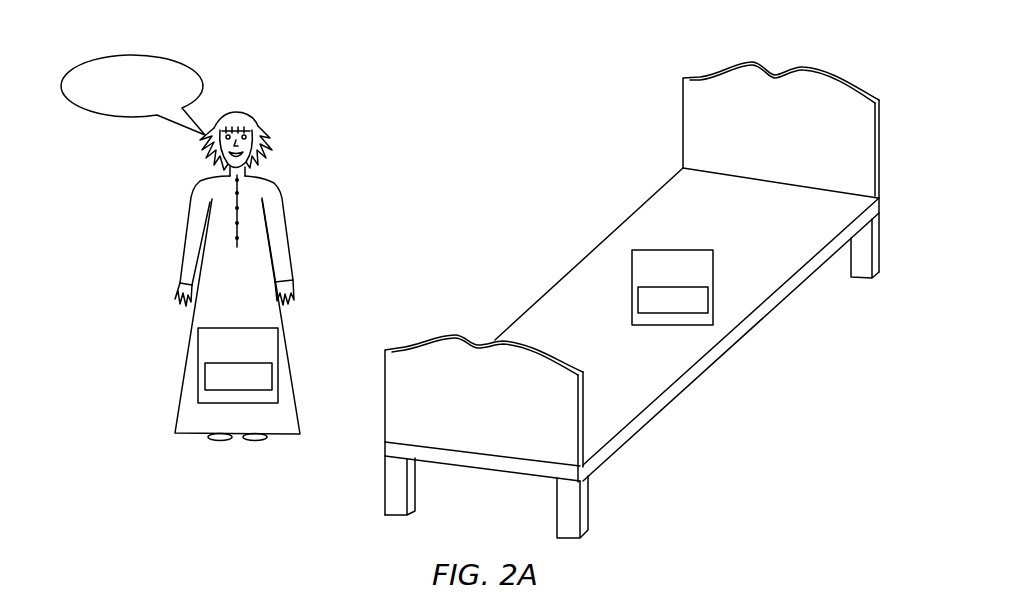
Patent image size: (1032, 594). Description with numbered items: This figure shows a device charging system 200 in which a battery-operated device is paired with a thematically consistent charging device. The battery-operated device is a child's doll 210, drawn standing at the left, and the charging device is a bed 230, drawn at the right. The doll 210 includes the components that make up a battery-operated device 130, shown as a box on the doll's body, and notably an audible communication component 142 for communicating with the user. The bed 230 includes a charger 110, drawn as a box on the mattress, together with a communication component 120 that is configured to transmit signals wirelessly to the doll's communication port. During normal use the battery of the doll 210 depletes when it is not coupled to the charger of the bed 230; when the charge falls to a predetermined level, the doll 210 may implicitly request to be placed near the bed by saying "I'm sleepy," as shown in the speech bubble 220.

The device charging system 200 is at (280, 54).
The child's doll 210 is at (236, 110).
The speech bubble 220 is at (132, 56).
The bed 230 is at (781, 44).
The charger 110 is at (672, 287).
The communication component 120 is at (673, 300).
The battery-operated device 130 is at (238, 365).
The audible communication component 142 is at (238, 376).